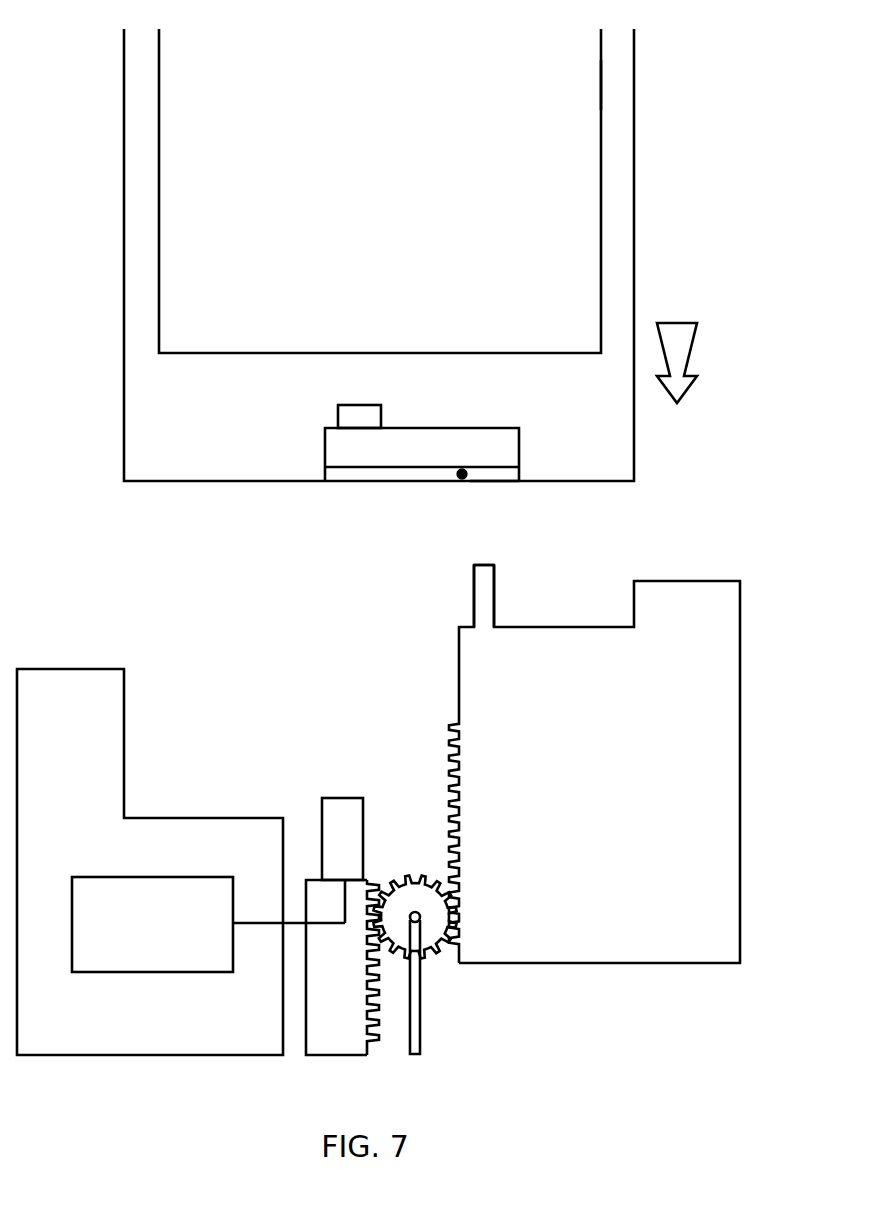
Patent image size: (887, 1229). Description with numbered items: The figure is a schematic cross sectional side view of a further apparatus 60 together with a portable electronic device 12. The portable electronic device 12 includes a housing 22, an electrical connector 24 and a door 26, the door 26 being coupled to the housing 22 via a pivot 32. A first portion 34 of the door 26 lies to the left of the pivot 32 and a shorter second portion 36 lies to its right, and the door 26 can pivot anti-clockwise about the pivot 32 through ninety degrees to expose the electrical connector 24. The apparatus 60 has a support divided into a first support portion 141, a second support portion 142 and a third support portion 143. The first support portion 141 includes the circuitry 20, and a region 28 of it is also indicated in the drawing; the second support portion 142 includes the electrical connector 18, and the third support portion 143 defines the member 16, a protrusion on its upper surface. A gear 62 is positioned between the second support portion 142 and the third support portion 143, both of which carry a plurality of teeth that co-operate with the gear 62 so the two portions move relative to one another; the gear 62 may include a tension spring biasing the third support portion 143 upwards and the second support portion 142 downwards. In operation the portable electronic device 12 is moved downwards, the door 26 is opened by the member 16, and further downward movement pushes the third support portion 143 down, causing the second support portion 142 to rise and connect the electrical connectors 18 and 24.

The portable electronic device 12 is at (688, 182).
The housing 22 is at (623, 81).
The electrical connector 24 is at (368, 413).
The door 26 is at (338, 480).
The first portion 34 is at (390, 479).
The pivot 32 is at (458, 482).
The second portion 36 is at (500, 481).
The first support portion 141 is at (92, 1057).
The second support portion 142 is at (342, 1057).
The third support portion 143 is at (593, 966).
The region 28 is at (179, 752).
The circuitry 20 is at (157, 973).
The electrical connector 18 is at (341, 810).
The member 16 is at (483, 599).
The gear 62 is at (441, 981).
The apparatus 60 is at (635, 1062).